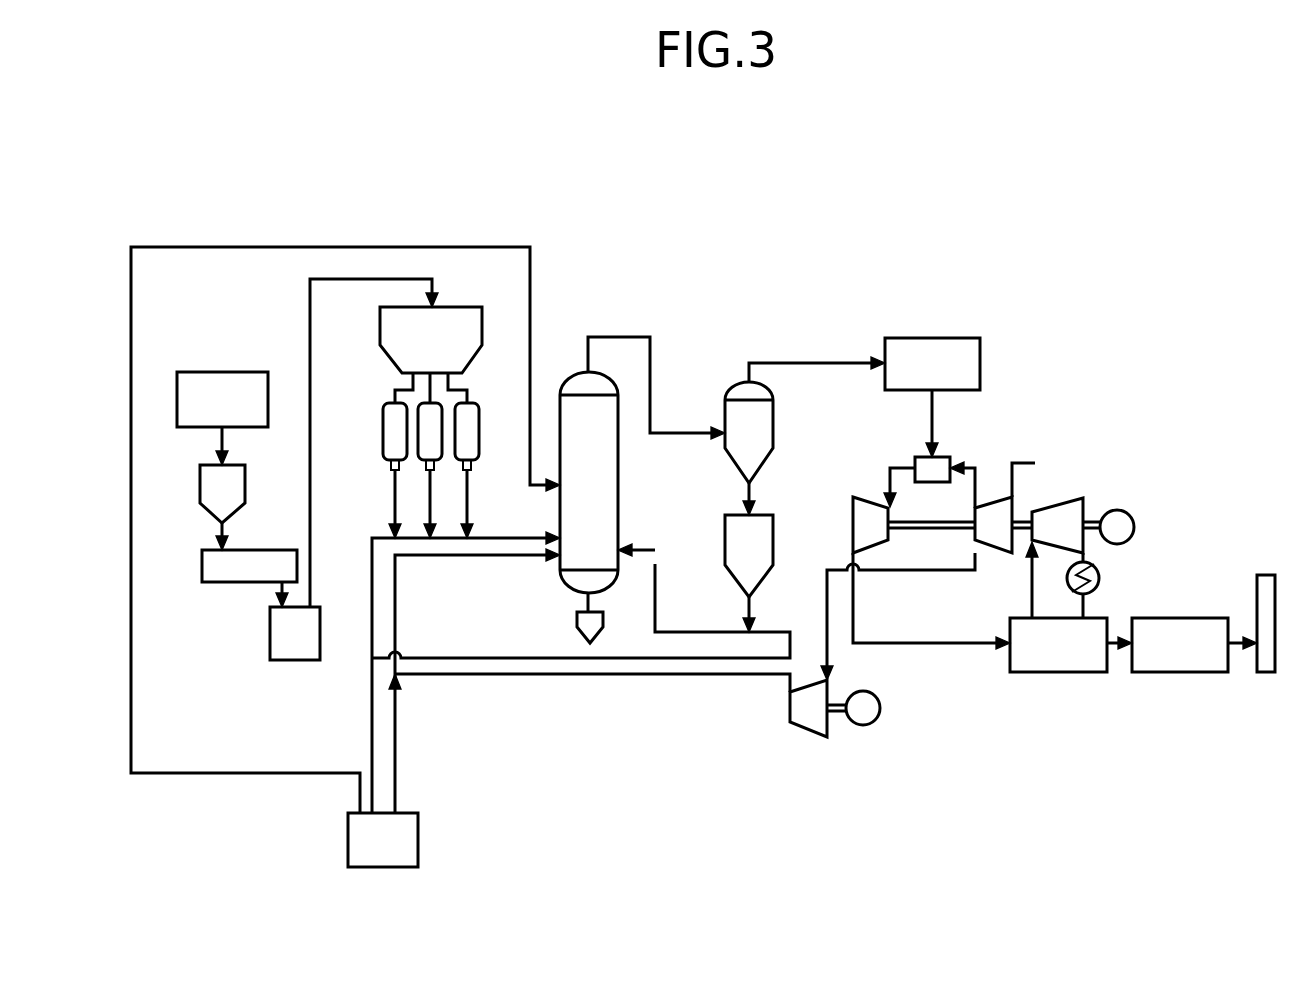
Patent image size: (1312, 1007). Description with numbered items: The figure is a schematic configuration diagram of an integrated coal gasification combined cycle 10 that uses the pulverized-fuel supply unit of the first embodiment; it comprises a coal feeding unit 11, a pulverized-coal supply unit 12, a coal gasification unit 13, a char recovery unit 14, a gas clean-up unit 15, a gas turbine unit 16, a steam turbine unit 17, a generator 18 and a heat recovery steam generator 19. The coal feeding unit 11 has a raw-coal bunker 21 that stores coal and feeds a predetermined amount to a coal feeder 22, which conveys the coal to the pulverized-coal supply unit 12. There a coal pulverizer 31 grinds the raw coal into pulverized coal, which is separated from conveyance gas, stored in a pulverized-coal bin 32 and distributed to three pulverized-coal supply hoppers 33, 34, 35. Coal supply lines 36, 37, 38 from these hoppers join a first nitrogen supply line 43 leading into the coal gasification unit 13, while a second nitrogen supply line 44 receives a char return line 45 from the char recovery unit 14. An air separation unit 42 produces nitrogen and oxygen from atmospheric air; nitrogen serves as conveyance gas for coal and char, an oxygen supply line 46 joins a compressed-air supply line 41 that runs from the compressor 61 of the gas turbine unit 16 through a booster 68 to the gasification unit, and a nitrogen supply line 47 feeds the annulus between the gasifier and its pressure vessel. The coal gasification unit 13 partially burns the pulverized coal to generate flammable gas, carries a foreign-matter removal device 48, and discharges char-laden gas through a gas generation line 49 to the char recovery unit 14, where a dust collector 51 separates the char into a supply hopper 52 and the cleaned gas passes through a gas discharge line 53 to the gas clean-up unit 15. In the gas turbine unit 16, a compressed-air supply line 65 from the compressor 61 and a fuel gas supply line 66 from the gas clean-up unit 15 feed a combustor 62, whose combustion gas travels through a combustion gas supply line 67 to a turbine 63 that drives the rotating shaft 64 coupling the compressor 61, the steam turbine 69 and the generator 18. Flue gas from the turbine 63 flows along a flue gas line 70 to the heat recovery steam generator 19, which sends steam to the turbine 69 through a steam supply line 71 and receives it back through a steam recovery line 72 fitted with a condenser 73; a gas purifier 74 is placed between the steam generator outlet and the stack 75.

The integrated coal gasification combined cycle 10 is at (485, 234).
The coal feeding unit 11 is at (178, 352).
The pulverized-coal supply unit 12 is at (340, 262).
The coal gasification unit 13 is at (577, 350).
The char recovery unit 14 is at (738, 371).
The gas clean-up unit 15 is at (952, 328).
The gas turbine unit 16 is at (872, 465).
The steam turbine unit 17 is at (1044, 470).
The generator 18 is at (1137, 510).
The heat recovery steam generator 19 is at (1088, 686).
The raw-coal bunker 21 is at (200, 489).
The coal feeder 22 is at (202, 564).
The coal pulverizer 31 is at (270, 635).
The pulverized-coal bin 32 is at (460, 306).
The pulverized-coal supply hopper 33 is at (382, 403).
The pulverized-coal supply hopper 34 is at (418, 437).
The pulverized-coal supply hopper 35 is at (470, 402).
The coal supply line 36 is at (392, 504).
The coal supply line 37 is at (428, 518).
The coal supply line 38 is at (469, 502).
The compressed-air supply line 41 is at (612, 681).
The air separation unit 42 is at (348, 830).
The first nitrogen supply line 43 is at (371, 700).
The second nitrogen supply line 44 is at (437, 658).
The char return line 45 is at (752, 613).
The oxygen supply line 46 is at (400, 703).
The nitrogen supply line 47 is at (130, 516).
The foreign-matter removal device 48 is at (576, 622).
The gas generation line 49 is at (654, 391).
The dust collector 51 is at (773, 430).
The supply hopper 52 is at (773, 543).
The gas discharge line 53 is at (800, 363).
The compressor 61 is at (991, 553).
The combustor 62 is at (950, 458).
The turbine 63 is at (852, 509).
The rotating shaft 64 is at (935, 530).
The compressed-air supply line 65 is at (974, 480).
The fuel gas supply line 66 is at (938, 405).
The combustion gas supply line 67 is at (893, 465).
The booster 68 is at (800, 727).
The turbine 69 is at (1061, 501).
The flue gas line 70 is at (928, 647).
The steam supply line 71 is at (1025, 599).
The steam recovery line 72 is at (1088, 601).
The condenser 73 is at (1100, 572).
The gas purifier 74 is at (1190, 618).
The stack 75 is at (1265, 575).